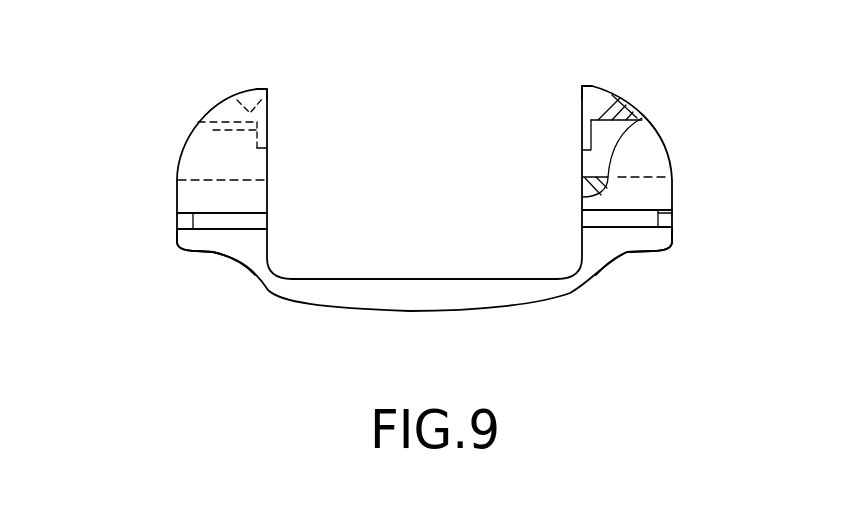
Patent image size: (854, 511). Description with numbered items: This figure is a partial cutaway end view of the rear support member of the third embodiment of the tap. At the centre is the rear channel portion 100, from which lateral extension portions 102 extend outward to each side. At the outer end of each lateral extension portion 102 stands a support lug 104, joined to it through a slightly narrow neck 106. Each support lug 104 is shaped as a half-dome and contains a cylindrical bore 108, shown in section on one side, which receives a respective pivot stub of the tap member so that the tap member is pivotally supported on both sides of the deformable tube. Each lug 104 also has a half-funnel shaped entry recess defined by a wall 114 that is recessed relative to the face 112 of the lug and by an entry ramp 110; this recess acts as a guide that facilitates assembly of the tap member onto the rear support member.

The rear channel portion 100 is at (402, 299).
The lateral extension portions 102 is at (212, 250).
The support lugs 104 is at (185, 197).
The neck 106 is at (200, 222).
The cylindrical bore 108 is at (200, 160).
The entry ramp 110 is at (267, 91).
The face 112 is at (267, 168).
The wall 114 is at (200, 124).